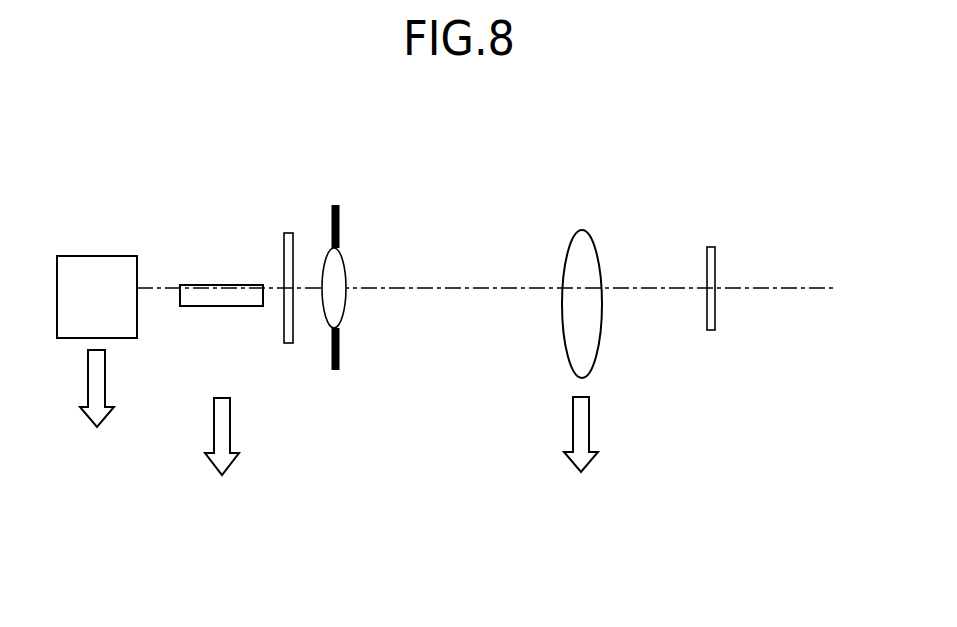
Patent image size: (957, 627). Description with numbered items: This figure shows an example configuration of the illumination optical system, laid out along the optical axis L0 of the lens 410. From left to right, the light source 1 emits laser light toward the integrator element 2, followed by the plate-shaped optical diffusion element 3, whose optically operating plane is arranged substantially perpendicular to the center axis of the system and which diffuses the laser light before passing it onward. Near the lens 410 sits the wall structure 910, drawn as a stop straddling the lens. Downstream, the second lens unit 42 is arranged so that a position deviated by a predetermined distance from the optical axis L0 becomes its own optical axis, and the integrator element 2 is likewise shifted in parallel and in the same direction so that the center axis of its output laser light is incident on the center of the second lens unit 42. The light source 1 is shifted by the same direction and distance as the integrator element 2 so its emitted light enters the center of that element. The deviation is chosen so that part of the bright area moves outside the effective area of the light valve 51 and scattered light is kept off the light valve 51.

The light source 1 is at (99, 256).
The integrator element 2 is at (218, 306).
The optical diffusion element 3 is at (294, 256).
The lens 410 is at (327, 318).
The wall structure 910 is at (340, 218).
The second lens unit 42 is at (566, 248).
The light valve 51 is at (718, 248).
The optical axis L0 is at (823, 288).